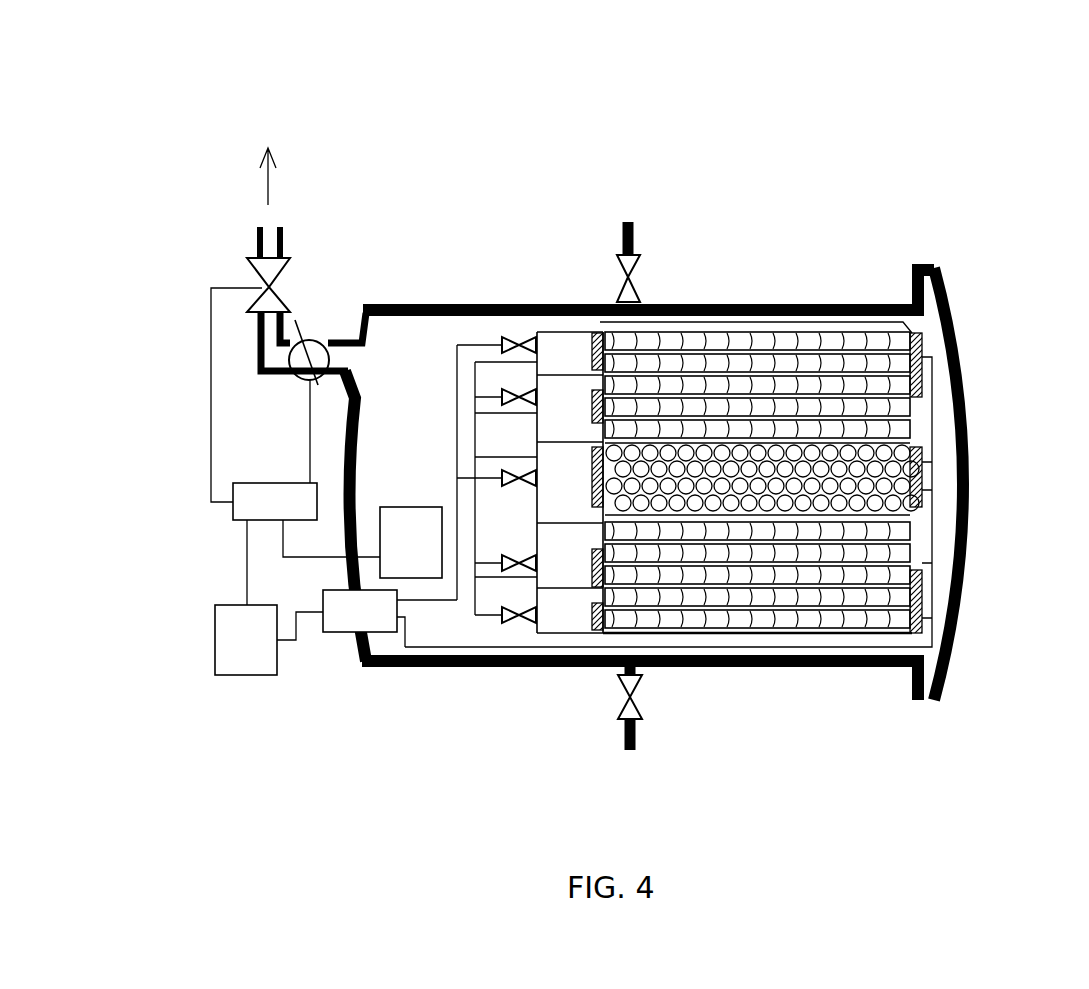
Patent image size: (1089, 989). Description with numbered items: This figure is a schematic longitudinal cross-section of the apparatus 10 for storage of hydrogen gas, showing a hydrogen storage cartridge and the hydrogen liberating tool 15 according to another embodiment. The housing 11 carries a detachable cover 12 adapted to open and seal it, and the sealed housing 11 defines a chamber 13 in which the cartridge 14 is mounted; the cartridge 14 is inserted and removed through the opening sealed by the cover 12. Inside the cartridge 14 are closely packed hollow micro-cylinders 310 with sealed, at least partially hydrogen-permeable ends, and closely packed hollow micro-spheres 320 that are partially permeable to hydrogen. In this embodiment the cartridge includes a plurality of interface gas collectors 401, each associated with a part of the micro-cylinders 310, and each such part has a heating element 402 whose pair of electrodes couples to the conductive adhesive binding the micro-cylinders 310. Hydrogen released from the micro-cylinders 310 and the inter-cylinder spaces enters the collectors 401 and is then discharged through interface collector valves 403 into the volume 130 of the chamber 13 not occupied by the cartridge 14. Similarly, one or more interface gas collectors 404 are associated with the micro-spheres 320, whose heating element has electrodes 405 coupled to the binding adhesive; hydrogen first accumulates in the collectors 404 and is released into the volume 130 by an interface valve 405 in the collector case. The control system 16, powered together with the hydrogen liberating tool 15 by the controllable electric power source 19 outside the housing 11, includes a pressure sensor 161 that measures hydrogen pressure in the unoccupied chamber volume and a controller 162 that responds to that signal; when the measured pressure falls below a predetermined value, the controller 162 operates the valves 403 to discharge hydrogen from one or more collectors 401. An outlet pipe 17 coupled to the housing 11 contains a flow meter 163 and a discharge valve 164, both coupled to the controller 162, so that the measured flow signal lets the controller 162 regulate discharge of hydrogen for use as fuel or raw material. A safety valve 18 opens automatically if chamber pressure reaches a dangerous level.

The apparatus for storage of hydrogen gas 10 is at (906, 193).
The housing 11 is at (740, 302).
The detachable cover 12 is at (960, 372).
The chamber 13 is at (472, 667).
The cartridge 14 is at (818, 635).
The hydrogen liberating tool 15 is at (432, 372).
The control system 16 is at (228, 556).
The outlet pipe 17 is at (262, 385).
The safety valve 18 is at (632, 697).
The controllable electric power source 19 is at (260, 651).
The volume of the chamber 130 is at (388, 357).
The pressure sensor 161 is at (432, 556).
The controller 162 is at (296, 515).
The flow meter 163 is at (311, 337).
The discharge valve 164 is at (272, 287).
The micro-cylinders 310 is at (812, 372).
The micro-spheres 320 is at (753, 545).
The interface gas collectors 401 is at (556, 397).
The heating element 402 is at (607, 383).
The interface collector valves 403 is at (503, 470).
The interface gas collectors 404 is at (502, 397).
The interface valve 405 is at (922, 460).